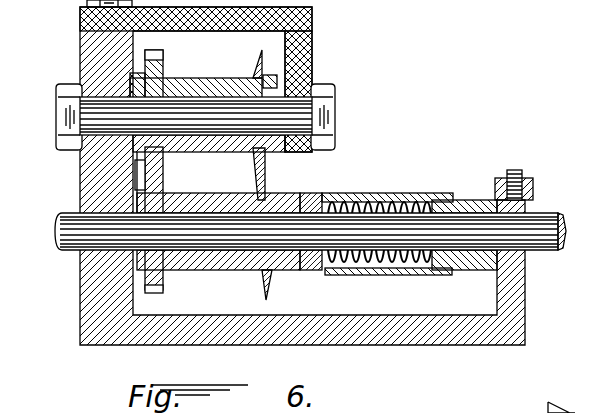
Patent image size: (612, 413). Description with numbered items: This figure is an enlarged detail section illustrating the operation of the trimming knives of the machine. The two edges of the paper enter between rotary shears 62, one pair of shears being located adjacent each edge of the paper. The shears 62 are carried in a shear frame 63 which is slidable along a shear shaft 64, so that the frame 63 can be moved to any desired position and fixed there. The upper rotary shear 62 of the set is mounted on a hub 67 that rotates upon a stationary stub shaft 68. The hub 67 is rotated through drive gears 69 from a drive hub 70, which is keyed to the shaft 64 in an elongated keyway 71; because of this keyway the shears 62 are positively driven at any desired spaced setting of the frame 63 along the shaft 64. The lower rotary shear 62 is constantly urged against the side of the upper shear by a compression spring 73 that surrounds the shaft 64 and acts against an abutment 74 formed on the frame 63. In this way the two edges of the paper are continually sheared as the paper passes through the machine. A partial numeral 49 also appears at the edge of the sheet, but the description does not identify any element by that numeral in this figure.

The rotary shears 62 is at (262, 68).
The shear frame 63 is at (88, 182).
The shear shaft 64 is at (540, 216).
The hub 67 is at (198, 78).
The stationary stub shaft 68 is at (74, 132).
The drive gears 69 is at (163, 186).
The drive hub 70 is at (230, 270).
The elongated keyway 71 is at (566, 222).
The compression spring 73 is at (388, 202).
The abutment 74 is at (478, 204).
The lever 49 is at (538, 405).